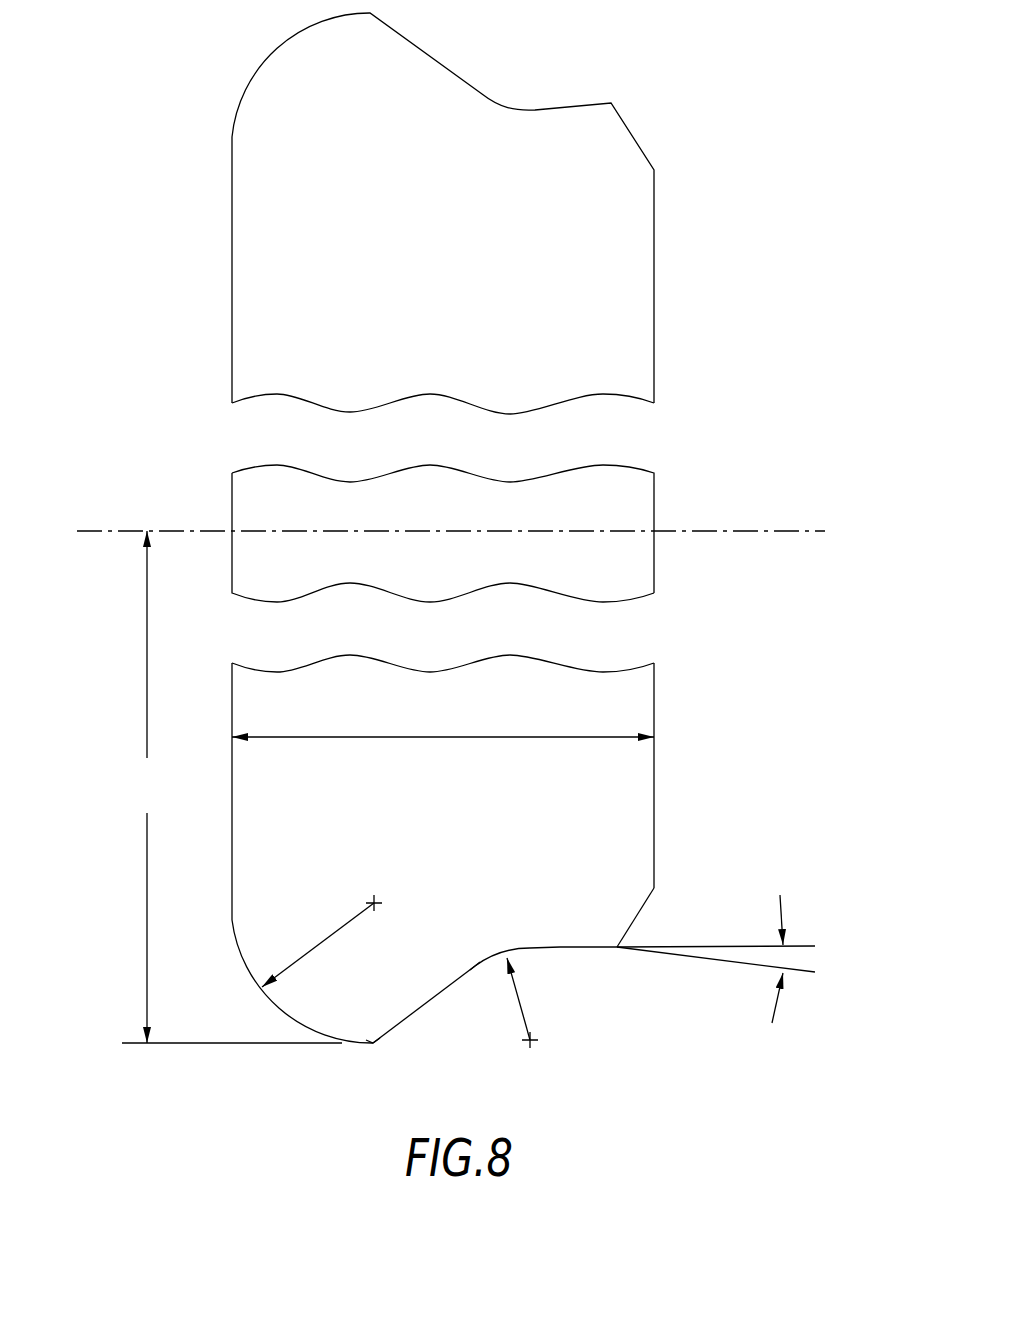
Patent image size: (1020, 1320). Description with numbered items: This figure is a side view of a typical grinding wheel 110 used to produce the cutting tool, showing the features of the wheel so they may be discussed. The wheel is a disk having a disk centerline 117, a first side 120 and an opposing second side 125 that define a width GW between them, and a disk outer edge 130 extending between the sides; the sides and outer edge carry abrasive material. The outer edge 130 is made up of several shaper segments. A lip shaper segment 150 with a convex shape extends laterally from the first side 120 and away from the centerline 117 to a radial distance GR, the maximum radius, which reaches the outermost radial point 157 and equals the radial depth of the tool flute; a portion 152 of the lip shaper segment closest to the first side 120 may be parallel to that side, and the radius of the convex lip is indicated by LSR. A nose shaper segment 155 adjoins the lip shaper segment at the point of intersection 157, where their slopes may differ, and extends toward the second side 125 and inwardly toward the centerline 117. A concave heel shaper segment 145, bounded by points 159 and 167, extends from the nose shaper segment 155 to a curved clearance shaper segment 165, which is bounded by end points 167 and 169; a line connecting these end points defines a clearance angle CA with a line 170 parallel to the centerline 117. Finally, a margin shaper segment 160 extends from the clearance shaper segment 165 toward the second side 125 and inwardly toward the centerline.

The grinding wheel 110 is at (240, 186).
The disk centerline 117 is at (212, 530).
The first side 120 is at (232, 845).
The second side 125 is at (655, 793).
The disk outer edge 130 is at (288, 1063).
The heel shaper segment 145 is at (493, 958).
The lip shaper segment 150 is at (287, 1018).
The portion of the lip shaper segment 152 is at (232, 885).
The nose shaper segment 155 is at (410, 1013).
The outermost radial point 157 is at (372, 1048).
The boundary point of heel shaper segment 159 is at (477, 967).
The margin shaper segment 160 is at (640, 913).
The clearance shaper segment 165 is at (577, 950).
The end point of clearance shaper segment 167 is at (538, 950).
The end point of clearance shaper segment 169 is at (615, 955).
The line parallel to the centerline 170 is at (725, 946).
The maximum radius GR is at (147, 787).
The width GW is at (553, 737).
The lower surface radius dimension LSR is at (333, 932).
The clearance angle CA is at (785, 953).